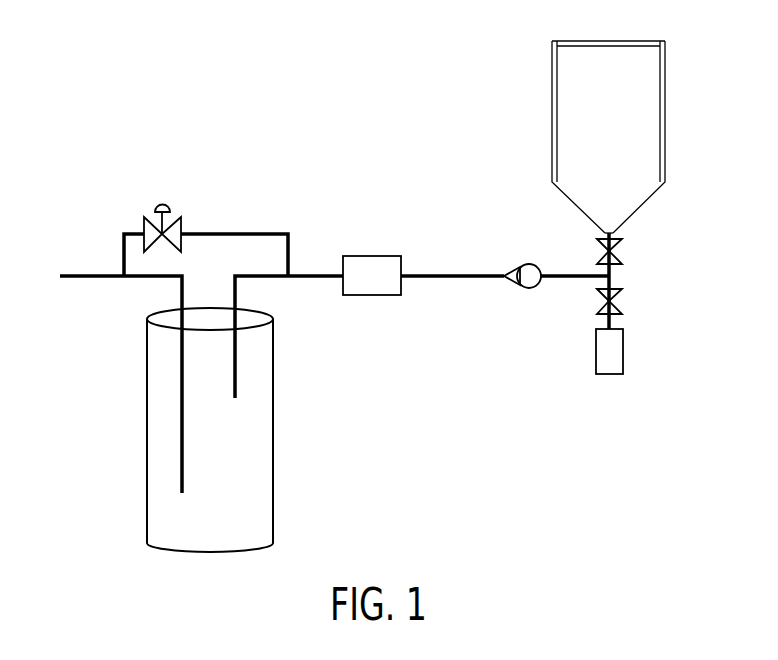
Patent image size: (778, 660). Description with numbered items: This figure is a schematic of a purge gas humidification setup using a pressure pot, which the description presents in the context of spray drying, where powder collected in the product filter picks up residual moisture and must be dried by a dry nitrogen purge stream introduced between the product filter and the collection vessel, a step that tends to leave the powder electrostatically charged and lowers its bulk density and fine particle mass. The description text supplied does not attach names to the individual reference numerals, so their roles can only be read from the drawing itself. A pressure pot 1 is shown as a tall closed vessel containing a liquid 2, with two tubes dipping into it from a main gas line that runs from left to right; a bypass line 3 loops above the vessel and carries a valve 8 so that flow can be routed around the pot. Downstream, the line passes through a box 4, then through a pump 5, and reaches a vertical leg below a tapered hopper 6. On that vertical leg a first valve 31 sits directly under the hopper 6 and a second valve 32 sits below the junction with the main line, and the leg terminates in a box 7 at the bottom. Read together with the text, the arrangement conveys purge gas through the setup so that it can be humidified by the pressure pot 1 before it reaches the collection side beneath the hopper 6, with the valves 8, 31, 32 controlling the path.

The vessel 1 is at (273, 393).
The liquid contents 2 is at (231, 513).
The bypass pipe 3 is at (252, 234).
The flow controller 4 is at (379, 287).
The pump 5 is at (529, 264).
The hopper 6 is at (613, 157).
The collector 7 is at (616, 366).
The bypass valve 8 is at (163, 204).
The upper valve 31 is at (622, 249).
The lower valve 32 is at (622, 300).